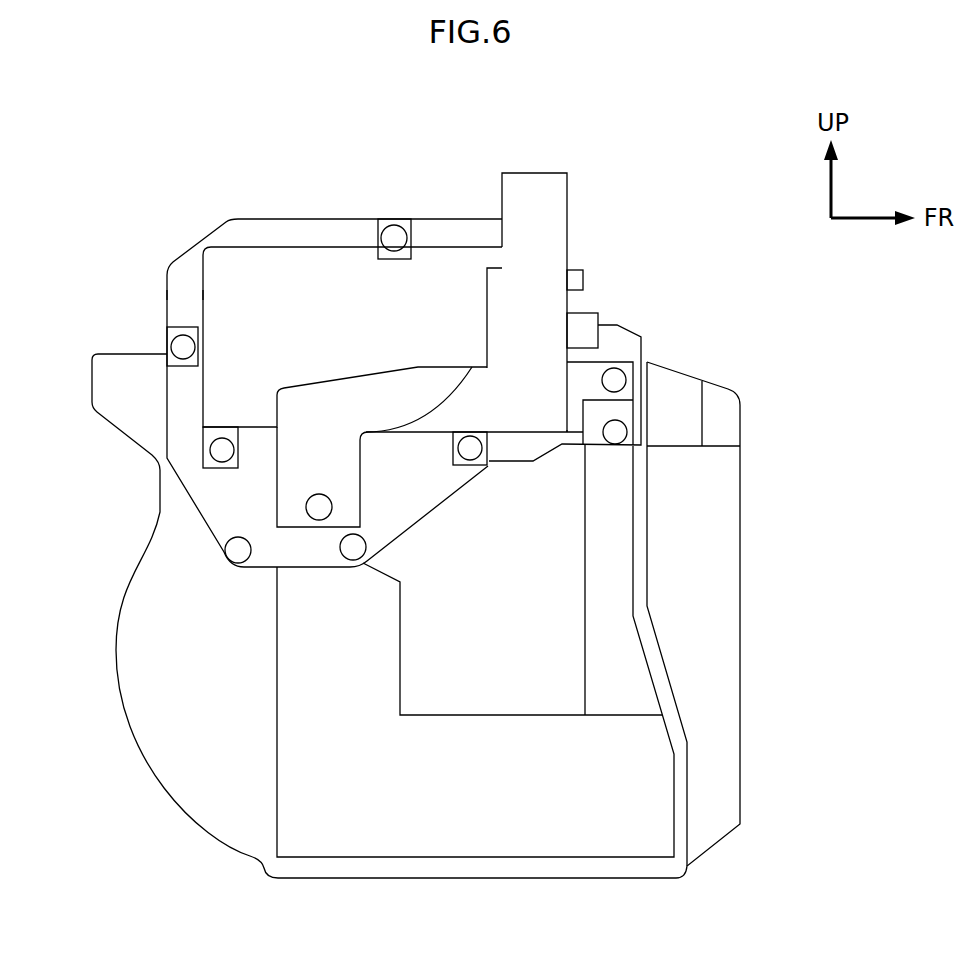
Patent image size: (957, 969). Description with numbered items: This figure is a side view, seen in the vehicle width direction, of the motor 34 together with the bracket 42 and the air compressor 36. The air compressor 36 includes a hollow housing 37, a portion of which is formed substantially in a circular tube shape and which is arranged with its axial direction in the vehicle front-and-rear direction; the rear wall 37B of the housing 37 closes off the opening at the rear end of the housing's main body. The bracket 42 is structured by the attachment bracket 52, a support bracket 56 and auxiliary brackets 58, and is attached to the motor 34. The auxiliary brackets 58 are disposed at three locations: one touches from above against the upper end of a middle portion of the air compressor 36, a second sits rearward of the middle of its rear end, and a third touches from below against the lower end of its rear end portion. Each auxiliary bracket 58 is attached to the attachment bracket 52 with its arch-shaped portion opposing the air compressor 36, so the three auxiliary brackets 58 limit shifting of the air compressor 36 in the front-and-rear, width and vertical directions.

The motor 34 is at (688, 372).
The air compressor 36 is at (265, 245).
The housing 37 is at (317, 284).
The rear wall 37B is at (203, 288).
The bracket 42 is at (535, 173).
The attachment bracket 52 is at (610, 323).
The support bracket 56 is at (513, 402).
The auxiliary brackets 58 is at (422, 245).